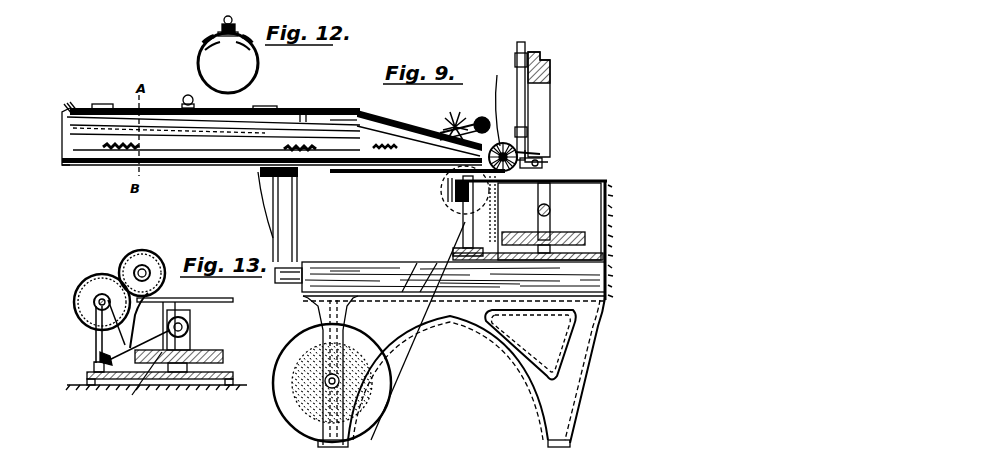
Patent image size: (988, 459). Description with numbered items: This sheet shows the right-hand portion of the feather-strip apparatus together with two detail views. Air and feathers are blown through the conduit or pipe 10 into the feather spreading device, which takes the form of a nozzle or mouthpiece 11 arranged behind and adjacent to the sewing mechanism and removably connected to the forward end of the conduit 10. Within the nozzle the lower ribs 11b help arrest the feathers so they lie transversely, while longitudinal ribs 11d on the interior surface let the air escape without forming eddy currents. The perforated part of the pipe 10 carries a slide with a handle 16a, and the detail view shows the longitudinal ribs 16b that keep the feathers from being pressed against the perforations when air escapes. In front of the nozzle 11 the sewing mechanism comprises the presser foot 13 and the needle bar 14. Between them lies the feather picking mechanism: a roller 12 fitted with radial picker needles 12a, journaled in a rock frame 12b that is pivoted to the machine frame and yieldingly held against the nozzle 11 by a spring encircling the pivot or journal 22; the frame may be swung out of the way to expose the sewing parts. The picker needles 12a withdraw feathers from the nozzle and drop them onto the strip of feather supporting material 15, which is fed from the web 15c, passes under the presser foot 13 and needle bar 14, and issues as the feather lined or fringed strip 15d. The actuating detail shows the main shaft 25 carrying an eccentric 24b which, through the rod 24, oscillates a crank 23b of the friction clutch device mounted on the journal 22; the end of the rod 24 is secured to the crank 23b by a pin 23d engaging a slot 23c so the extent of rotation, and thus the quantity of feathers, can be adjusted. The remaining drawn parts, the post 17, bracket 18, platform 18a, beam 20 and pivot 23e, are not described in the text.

In FIG. 9, the conduit or pipe 10 is at (73, 147).
In FIG. 9, the nozzle or mouthpiece 11 is at (346, 150).
In FIG. 9, the ribs 11b is at (399, 151).
In FIG. 9, the longitudinal ribs 11d is at (374, 123).
In FIG. 9, the roller 12 is at (483, 117).
In FIG. 9, the picker needles 12a is at (495, 104).
In FIG. 9, the rock frame 12b is at (457, 115).
In FIG. 9, the presser foot 13 is at (545, 166).
In FIG. 9, the needle bar 14 is at (541, 157).
In FIG. 12, the needle bar 14 is at (220, 38).
In FIG. 9, the strip of feather supporting material 15 is at (463, 230).
In FIG. 9, the web 15c is at (362, 408).
In FIG. 9, the feather lined or fringed strip 15d is at (611, 306).
In FIG. 9, the handle 16a is at (182, 95).
In FIG. 12, the handle 16a is at (226, 18).
In FIG. 9, the longitudinal ribs 16b is at (65, 102).
In FIG. 12, the longitudinal ribs 16b is at (203, 55).
In FIG. 9, the post 17 is at (497, 200).
In FIG. 9, the bracket 18 is at (545, 113).
In FIG. 9, the platform 18a is at (603, 252).
In FIG. 9, the beam 20 is at (600, 290).
In FIG. 9, the pivot or journal 22 is at (446, 190).
In FIG. 13, the pivot or journal 22 is at (95, 300).
In FIG. 13, the crank 23b is at (97, 318).
In FIG. 13, the slot 23c is at (98, 342).
In FIG. 13, the pin 23d is at (95, 382).
In FIG. 13, the pivot 23e is at (99, 356).
In FIG. 13, the rod 24 is at (181, 332).
In FIG. 13, the eccentric 24b is at (144, 381).
In FIG. 9, the main shaft 25 is at (551, 209).
In FIG. 13, the main shaft 25 is at (188, 330).